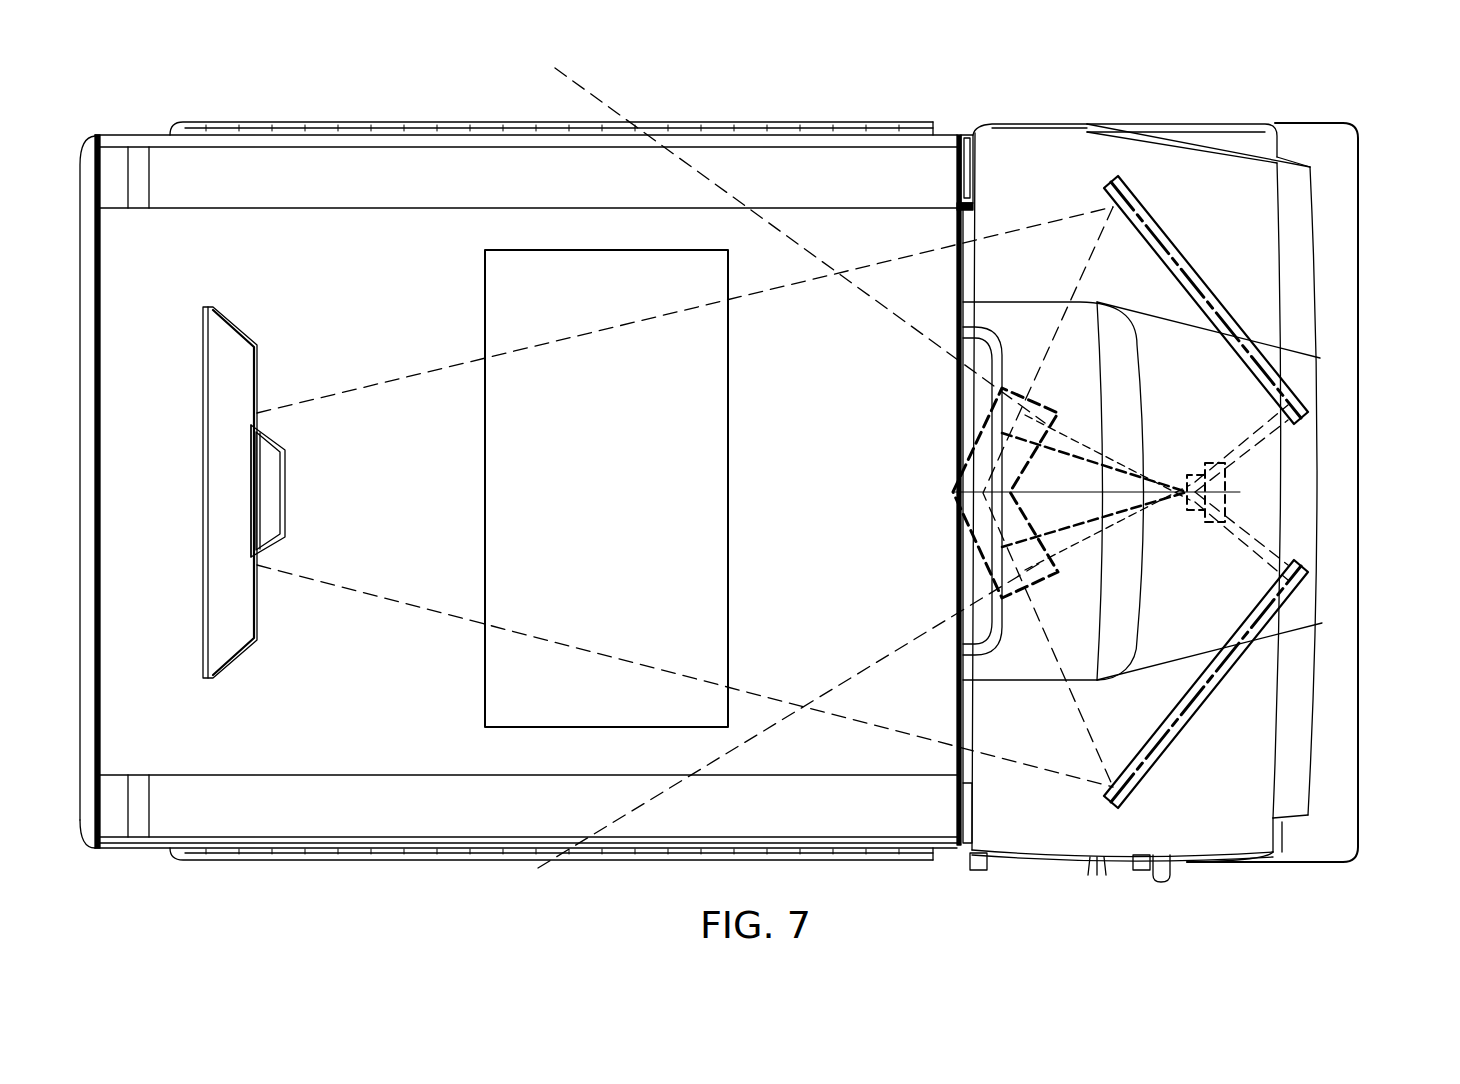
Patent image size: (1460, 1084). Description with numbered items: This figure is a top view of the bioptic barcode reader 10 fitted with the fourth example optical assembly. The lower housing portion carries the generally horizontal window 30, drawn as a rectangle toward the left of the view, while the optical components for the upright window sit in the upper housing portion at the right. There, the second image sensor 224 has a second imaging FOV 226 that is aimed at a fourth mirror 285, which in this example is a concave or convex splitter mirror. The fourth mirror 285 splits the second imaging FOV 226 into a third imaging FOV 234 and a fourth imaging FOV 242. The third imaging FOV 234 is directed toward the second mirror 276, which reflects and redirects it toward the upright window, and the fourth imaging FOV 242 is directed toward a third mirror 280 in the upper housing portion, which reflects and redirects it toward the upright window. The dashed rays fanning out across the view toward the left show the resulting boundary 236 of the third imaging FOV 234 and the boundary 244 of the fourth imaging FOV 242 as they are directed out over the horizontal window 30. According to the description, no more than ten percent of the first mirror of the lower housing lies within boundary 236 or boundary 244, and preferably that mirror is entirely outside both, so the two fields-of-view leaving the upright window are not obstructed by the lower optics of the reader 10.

The bioptic barcode reader 10 is at (142, 95).
The horizontal window 30 is at (732, 489).
The second image sensor 224 is at (1226, 492).
The second imaging FOV 226 is at (1102, 425).
The third imaging FOV 234 is at (1108, 527).
The boundary of third imaging FOV 236 is at (360, 386).
The fourth imaging FOV 242 is at (1107, 462).
The boundary of fourth imaging FOV 244 is at (610, 104).
The second mirror 276 is at (1163, 230).
The third mirror 280 is at (1172, 738).
The fourth mirror 285 is at (978, 540).